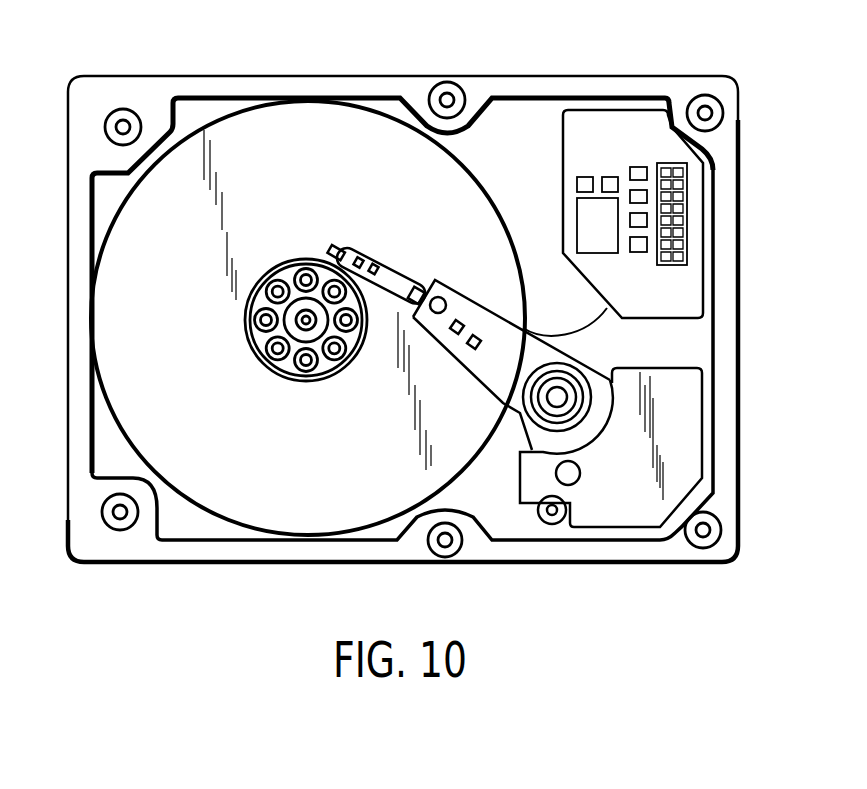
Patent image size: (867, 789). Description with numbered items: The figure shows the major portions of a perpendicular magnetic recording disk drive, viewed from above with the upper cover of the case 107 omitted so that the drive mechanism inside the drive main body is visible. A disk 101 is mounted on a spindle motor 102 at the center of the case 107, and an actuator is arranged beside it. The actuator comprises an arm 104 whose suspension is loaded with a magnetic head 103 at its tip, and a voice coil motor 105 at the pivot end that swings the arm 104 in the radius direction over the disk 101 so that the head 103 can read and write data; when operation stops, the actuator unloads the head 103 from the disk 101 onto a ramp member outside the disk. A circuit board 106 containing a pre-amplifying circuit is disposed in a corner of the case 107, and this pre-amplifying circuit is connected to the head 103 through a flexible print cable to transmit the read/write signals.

The disk 101 is at (307, 125).
The spindle motor 102 is at (305, 320).
The magnetic head 103 is at (340, 242).
The arm 104 is at (458, 303).
The voice coil motor 105 is at (683, 455).
The circuit board 106 is at (620, 122).
The case 107 is at (182, 75).